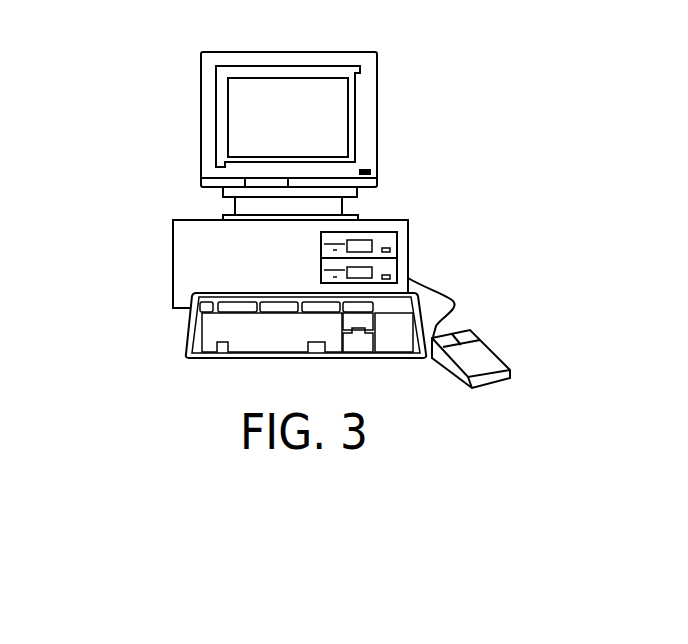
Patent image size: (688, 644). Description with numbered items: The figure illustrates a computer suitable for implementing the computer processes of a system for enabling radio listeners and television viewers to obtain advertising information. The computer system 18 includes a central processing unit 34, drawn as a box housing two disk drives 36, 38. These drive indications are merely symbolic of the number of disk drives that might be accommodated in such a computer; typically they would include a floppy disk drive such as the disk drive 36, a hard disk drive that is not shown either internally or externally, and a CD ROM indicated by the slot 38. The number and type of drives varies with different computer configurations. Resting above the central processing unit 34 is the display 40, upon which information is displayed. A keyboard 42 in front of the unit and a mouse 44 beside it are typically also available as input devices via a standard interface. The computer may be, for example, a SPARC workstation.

The computer system 18 is at (124, 100).
The computer 34 is at (190, 211).
The disk drive 36 is at (308, 243).
The disk drive 38 is at (308, 277).
The monitor 40 is at (394, 95).
The keyboard 42 is at (172, 328).
The mouse 44 is at (508, 338).